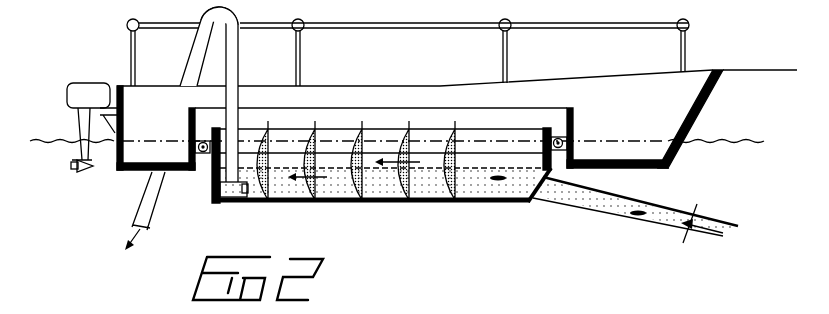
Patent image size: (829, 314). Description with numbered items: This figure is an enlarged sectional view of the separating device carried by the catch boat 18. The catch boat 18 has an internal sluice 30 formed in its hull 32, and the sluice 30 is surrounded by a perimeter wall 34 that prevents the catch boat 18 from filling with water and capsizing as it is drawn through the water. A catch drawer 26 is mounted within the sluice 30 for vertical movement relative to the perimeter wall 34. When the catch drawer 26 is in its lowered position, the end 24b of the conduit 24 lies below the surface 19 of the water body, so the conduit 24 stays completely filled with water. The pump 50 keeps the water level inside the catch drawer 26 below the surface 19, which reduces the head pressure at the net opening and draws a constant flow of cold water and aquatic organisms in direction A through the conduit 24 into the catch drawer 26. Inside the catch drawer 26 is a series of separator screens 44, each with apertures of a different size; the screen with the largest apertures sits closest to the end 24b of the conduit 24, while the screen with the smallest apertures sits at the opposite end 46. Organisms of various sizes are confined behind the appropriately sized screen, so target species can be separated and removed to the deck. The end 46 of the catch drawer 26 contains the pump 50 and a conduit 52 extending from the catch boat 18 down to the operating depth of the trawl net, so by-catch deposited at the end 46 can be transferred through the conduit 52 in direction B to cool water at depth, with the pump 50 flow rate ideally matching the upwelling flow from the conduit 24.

The catch boat 18 is at (698, 80).
The surface of the water body 19 is at (752, 137).
The conduit 24 is at (657, 222).
The end of conduit 24b is at (572, 200).
The catch drawer 26 is at (383, 192).
The internal sluice 30 is at (205, 166).
The hull 32 is at (686, 155).
The perimeter wall 34 is at (190, 112).
The separator screens 44 is at (362, 152).
The end of catch drawer 46 is at (272, 203).
The pump 50 is at (233, 197).
The conduit 52 is at (143, 200).